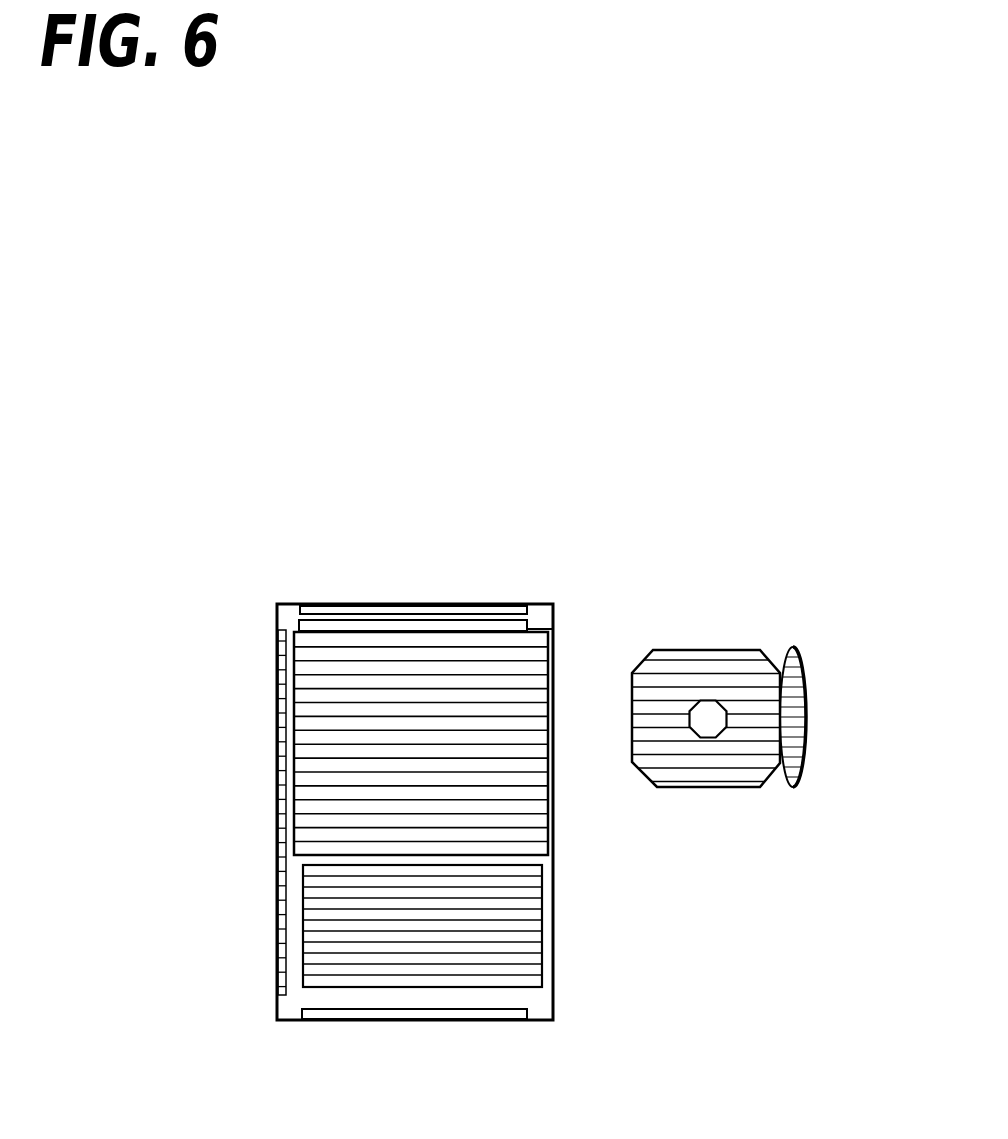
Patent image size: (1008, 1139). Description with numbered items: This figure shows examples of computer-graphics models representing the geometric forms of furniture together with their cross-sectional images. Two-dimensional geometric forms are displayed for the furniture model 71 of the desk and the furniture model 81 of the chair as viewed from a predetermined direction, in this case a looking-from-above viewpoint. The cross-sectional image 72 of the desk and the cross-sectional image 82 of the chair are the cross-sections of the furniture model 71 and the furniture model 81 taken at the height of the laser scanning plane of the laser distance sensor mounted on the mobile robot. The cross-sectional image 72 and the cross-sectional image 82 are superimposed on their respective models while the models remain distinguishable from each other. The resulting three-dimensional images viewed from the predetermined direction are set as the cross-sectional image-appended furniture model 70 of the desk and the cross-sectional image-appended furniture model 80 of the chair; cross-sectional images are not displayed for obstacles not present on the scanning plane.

The cross-sectional image-appended furniture model of the desk 70 is at (476, 687).
The furniture model of the desk 71 is at (492, 653).
The cross-sectional image of the furniture model of the desk 72 is at (533, 1006).
The cross-sectional image-appended furniture model of the chair 80 is at (754, 627).
The furniture model of the chair 81 is at (684, 672).
The cross-sectional image of the furniture model of the chair 82 is at (713, 730).